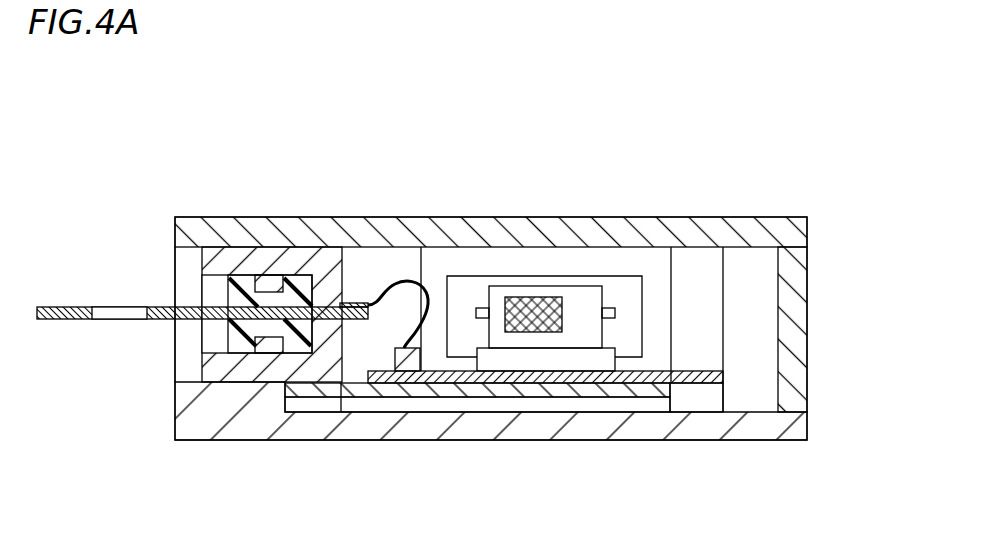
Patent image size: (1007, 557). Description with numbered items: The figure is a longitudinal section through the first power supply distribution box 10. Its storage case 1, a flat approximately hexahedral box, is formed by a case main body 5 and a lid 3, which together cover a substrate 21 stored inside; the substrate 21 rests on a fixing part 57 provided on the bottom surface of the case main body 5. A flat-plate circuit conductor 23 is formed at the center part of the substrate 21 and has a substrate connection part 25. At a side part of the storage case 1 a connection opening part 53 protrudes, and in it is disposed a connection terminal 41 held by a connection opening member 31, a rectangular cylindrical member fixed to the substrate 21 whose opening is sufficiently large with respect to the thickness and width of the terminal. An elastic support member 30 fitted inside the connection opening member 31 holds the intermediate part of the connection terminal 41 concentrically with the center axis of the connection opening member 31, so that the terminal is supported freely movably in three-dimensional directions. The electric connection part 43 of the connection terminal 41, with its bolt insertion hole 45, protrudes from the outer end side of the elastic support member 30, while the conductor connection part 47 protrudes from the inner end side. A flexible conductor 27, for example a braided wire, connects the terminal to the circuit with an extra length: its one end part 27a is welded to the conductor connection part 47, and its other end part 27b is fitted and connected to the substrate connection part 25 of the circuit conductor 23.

The storage case 1 is at (810, 105).
The lid 3 is at (714, 212).
The case main body 5 is at (812, 276).
The first power supply distribution box 10 is at (352, 168).
The substrate 21 is at (705, 377).
The circuit conductor 23 is at (636, 358).
The substrate connection part 25 is at (390, 384).
The flexible conductor 27 is at (431, 278).
The one end part of the flexible conductor 27a is at (358, 300).
The other end part of the flexible conductor 27b is at (428, 364).
The elastic support member 30 is at (218, 333).
The connection opening member 31 is at (267, 243).
The connection terminal 41 is at (73, 323).
The electric connection part 43 is at (68, 307).
The bolt insertion hole 45 is at (147, 312).
The conductor connection part 47 is at (480, 308).
The connection opening part 53 is at (171, 257).
The fixing part 57 is at (317, 405).